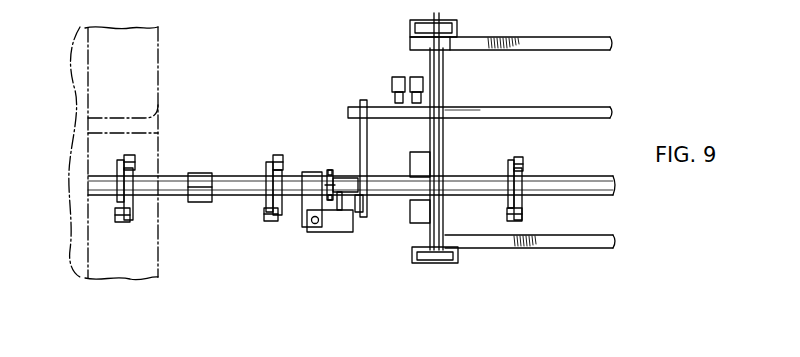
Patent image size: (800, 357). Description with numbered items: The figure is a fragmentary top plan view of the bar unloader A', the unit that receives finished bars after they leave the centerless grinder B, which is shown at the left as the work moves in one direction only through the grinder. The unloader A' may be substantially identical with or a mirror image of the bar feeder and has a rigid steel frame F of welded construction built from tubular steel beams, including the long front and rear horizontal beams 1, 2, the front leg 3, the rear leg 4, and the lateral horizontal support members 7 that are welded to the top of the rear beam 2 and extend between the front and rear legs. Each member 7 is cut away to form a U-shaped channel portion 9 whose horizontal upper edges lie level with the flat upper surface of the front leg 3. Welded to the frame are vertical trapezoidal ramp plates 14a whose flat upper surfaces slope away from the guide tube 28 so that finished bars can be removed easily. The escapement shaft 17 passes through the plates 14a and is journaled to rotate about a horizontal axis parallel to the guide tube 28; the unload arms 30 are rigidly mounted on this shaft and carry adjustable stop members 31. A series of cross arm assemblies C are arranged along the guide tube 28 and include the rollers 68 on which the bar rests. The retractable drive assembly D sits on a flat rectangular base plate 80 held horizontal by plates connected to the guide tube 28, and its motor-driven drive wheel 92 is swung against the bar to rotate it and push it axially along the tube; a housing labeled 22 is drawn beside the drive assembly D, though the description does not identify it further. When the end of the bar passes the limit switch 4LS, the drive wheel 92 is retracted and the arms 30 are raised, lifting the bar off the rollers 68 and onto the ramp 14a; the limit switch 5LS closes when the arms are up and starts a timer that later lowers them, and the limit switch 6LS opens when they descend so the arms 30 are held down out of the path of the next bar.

The front horizontal beam 1 is at (572, 245).
The rear horizontal beam 2 is at (553, 37).
The front leg 3 is at (413, 260).
The rear leg 4 is at (412, 25).
The lateral horizontal support member 7 is at (440, 53).
The U-shaped channel portion 9 is at (427, 232).
The trapezoidal ramp plate 14a is at (426, 49).
The escapement shaft 17 is at (588, 107).
The drive housing 22 is at (407, 213).
The guide tube 28 is at (570, 180).
The unload arm 30 is at (367, 153).
The stop member 31 is at (365, 200).
The roller 68 is at (123, 158).
The base plate 80 is at (305, 203).
The drive wheel 92 is at (330, 170).
The limit switch 4LS is at (200, 173).
The limit switch 5LS is at (393, 78).
The limit switch 6LS is at (422, 90).
The bar unloader A' is at (317, 37).
The centerless grinder B is at (162, 251).
The cross arm assembly C is at (146, 163).
The retractable drive assembly D is at (326, 162).
The frame F is at (594, 34).